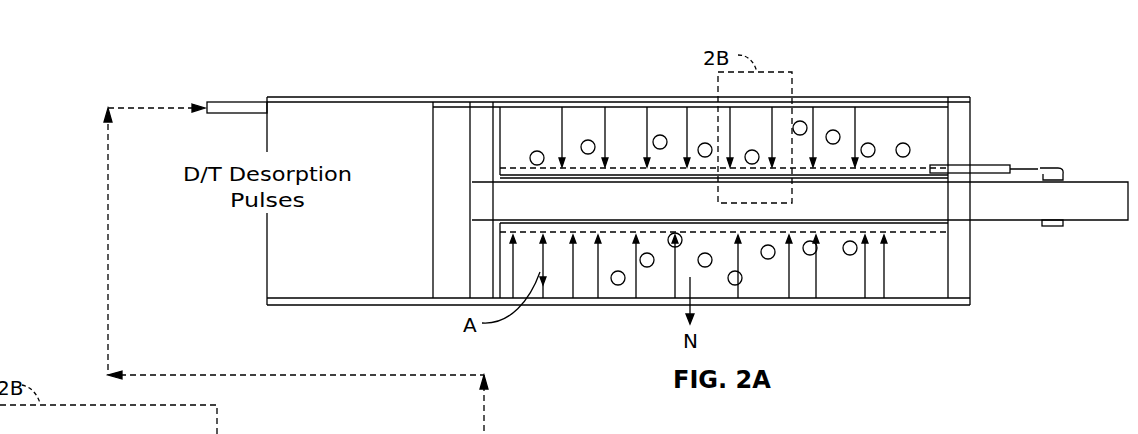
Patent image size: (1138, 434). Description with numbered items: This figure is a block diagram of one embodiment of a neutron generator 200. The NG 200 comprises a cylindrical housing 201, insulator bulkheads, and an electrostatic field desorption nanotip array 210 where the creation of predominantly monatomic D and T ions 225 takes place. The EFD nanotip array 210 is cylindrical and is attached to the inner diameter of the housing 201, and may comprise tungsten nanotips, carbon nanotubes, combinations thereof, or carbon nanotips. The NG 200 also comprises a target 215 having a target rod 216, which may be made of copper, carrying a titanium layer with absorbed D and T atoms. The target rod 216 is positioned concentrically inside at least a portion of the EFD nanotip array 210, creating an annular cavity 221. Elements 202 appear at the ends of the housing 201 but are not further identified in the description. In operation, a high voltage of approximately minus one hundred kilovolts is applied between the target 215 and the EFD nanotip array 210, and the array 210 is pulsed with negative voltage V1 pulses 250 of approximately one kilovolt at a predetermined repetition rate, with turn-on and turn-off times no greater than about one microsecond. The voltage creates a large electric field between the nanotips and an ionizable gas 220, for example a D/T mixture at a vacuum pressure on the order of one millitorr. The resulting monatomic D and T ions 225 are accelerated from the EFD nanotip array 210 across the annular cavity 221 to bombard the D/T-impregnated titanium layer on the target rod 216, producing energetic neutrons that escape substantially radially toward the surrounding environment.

The neutron generator 200 is at (268, 62).
The negative voltage V1 pulses 250 is at (240, 102).
The electrostatic field desorption nanotip array 210 is at (533, 108).
The cylindrical housing 201 is at (503, 98).
The end walls 202 is at (495, 110).
The monatomic D and T ions 225 is at (590, 141).
The ionizable gas 220 is at (907, 123).
The target rod 216 is at (485, 207).
The target 215 is at (978, 223).
The annular cavity 221 is at (937, 273).